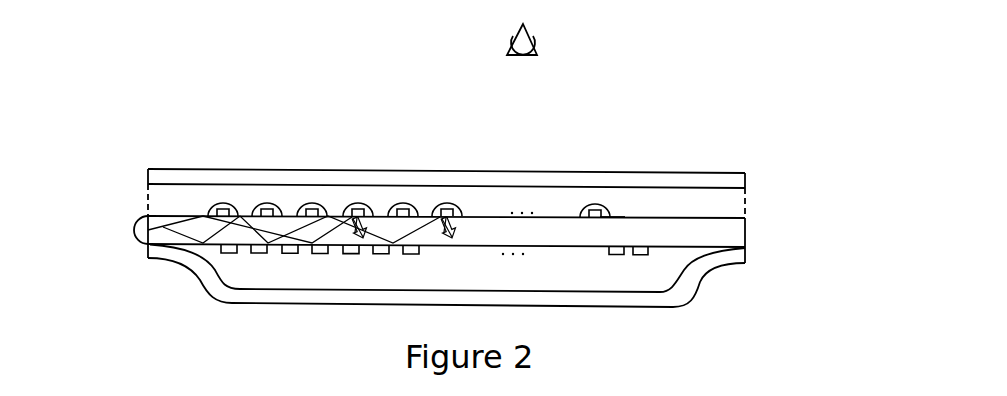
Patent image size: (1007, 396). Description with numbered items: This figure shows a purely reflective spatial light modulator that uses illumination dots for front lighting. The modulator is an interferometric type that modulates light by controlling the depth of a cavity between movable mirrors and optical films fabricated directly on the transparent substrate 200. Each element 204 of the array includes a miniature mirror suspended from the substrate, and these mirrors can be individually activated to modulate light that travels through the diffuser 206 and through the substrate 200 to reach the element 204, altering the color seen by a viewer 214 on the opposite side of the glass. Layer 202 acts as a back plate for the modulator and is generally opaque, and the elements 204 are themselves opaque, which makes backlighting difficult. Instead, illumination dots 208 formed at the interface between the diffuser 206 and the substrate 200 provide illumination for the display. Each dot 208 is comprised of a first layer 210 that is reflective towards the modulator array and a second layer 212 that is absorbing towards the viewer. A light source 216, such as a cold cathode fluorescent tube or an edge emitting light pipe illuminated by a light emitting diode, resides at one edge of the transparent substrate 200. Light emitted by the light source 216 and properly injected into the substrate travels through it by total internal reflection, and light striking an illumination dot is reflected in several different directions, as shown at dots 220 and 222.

The transparent substrate 200 is at (747, 235).
The layer 202 is at (693, 309).
The element 204 is at (639, 256).
The diffuser 206 is at (747, 183).
The illumination dot 208 is at (612, 225).
The first layer 210 is at (595, 209).
The second layer 212 is at (584, 213).
The viewer 214 is at (510, 48).
The light source 216 is at (137, 222).
The dot 220 is at (348, 204).
The dot 222 is at (443, 204).